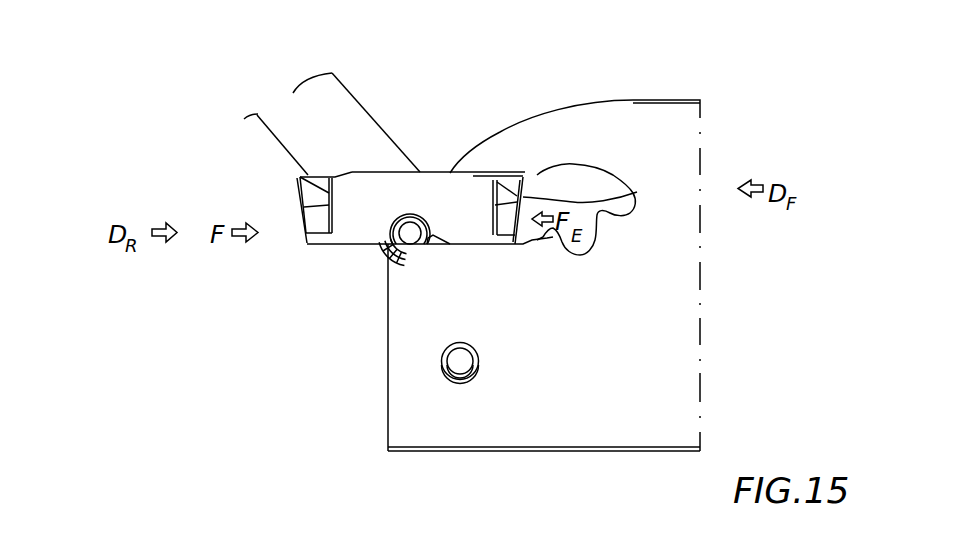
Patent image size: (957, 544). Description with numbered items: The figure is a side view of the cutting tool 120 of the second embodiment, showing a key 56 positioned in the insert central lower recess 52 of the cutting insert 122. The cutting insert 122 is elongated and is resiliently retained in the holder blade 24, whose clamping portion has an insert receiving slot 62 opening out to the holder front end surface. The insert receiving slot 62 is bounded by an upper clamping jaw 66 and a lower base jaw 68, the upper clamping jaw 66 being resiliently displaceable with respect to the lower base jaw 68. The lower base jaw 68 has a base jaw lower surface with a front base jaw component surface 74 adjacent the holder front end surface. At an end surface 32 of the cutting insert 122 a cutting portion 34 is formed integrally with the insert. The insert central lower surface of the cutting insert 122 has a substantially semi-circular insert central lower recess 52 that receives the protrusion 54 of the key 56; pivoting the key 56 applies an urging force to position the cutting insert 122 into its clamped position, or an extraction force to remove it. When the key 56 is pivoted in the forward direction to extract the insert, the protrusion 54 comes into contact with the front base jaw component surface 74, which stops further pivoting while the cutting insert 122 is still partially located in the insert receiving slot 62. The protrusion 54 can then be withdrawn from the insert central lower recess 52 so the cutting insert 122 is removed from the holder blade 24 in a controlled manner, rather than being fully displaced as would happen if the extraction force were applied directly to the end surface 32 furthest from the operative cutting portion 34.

The cutting tool 120 is at (176, 110).
The key 56 is at (278, 142).
The upper clamping jaw 66 is at (515, 98).
The cutting insert 122 is at (436, 106).
The cutting portion 34 is at (250, 190).
The holder blade 24 is at (350, 376).
The lower base jaw 68 is at (338, 349).
The insert central lower recess 52 is at (402, 222).
The protrusion 54 is at (410, 234).
The front base jaw component surface 74 is at (418, 240).
The insert receiving slot 62 is at (580, 187).
The end surface 32 is at (637, 192).